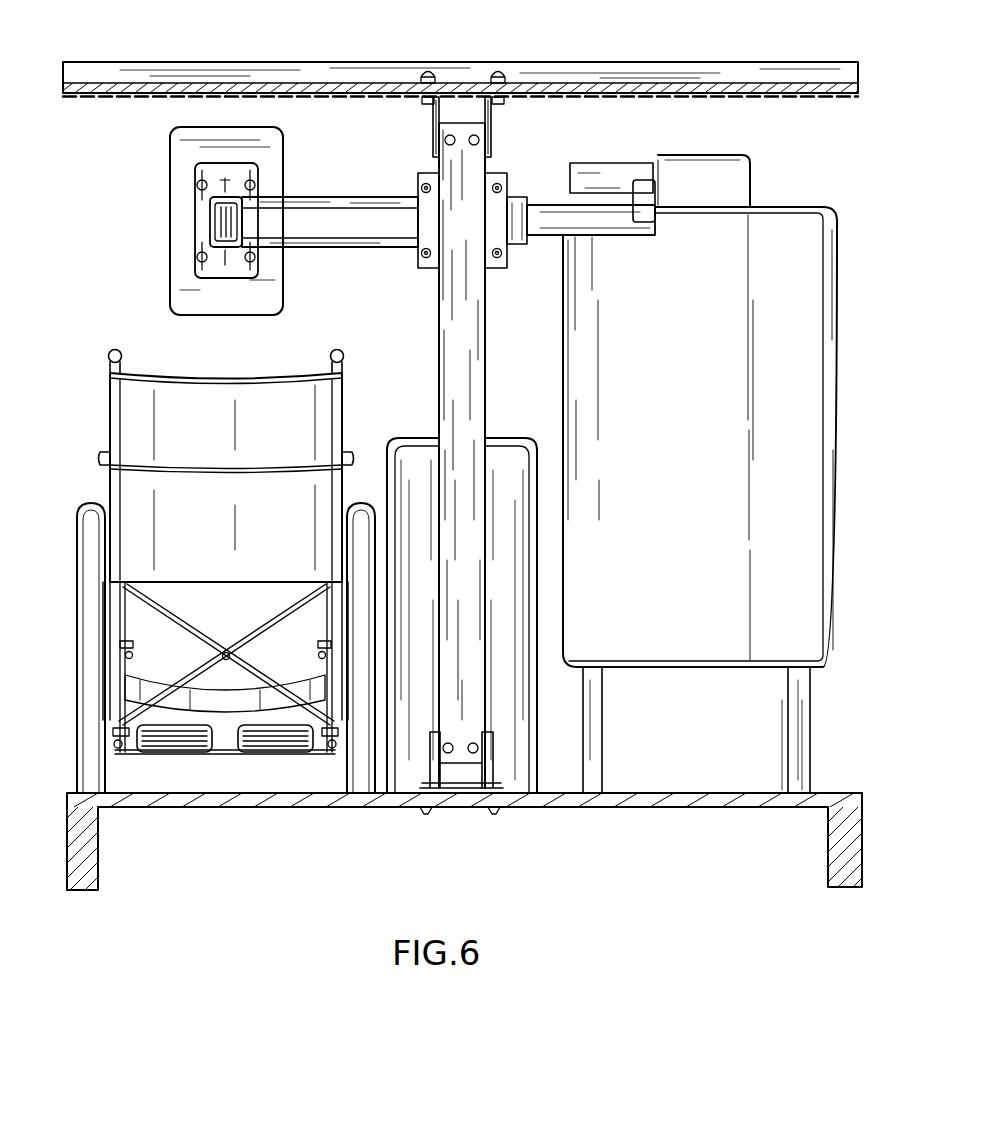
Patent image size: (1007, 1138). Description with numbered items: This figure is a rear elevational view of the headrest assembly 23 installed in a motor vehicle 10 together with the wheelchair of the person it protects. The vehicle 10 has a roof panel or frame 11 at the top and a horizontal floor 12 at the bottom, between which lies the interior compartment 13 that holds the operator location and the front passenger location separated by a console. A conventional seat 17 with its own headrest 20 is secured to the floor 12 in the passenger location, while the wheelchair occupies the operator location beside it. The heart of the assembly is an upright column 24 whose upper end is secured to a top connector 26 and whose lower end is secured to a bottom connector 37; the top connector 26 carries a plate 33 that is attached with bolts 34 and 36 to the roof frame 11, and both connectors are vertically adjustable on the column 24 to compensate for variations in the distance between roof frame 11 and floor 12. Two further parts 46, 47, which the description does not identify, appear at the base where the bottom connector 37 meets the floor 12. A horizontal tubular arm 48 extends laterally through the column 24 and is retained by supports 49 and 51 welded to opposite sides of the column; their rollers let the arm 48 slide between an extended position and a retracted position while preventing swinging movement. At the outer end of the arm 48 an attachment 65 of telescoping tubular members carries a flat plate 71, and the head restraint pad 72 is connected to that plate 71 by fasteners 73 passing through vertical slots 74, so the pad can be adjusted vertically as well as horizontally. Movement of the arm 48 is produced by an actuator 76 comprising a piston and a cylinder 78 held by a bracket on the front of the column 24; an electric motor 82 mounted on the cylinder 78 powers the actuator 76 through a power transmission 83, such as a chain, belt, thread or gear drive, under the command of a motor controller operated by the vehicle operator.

The motor vehicle 10 is at (718, 42).
The roof panel or frame 11 is at (585, 85).
The horizontal floor 12 is at (590, 796).
The interior compartment 13 is at (97, 490).
The conventional seat 17 is at (738, 640).
The headrest 20 is at (718, 166).
The headrest assembly 23 is at (524, 164).
The column 24 is at (475, 388).
The top connector 26 is at (421, 101).
The plate 33 is at (455, 99).
The bolt 34 is at (500, 72).
The bolt 36 is at (430, 72).
The bottom connector 37 is at (492, 741).
The floor fastener 46 is at (423, 812).
The floor fastener 47 is at (492, 812).
The horizontal arm 48 is at (318, 237).
The support 49 is at (406, 262).
The support 51 is at (500, 265).
The attachment 65 is at (208, 228).
The flat plate 71 is at (205, 212).
The head restraint pad 72 is at (181, 156).
The fasteners 73 is at (203, 260).
The vertical slots 74 is at (255, 179).
The actuator 76 is at (623, 250).
The cylinder 78 is at (558, 231).
The electric motor 82 is at (605, 164).
The power transmission 83 is at (648, 200).